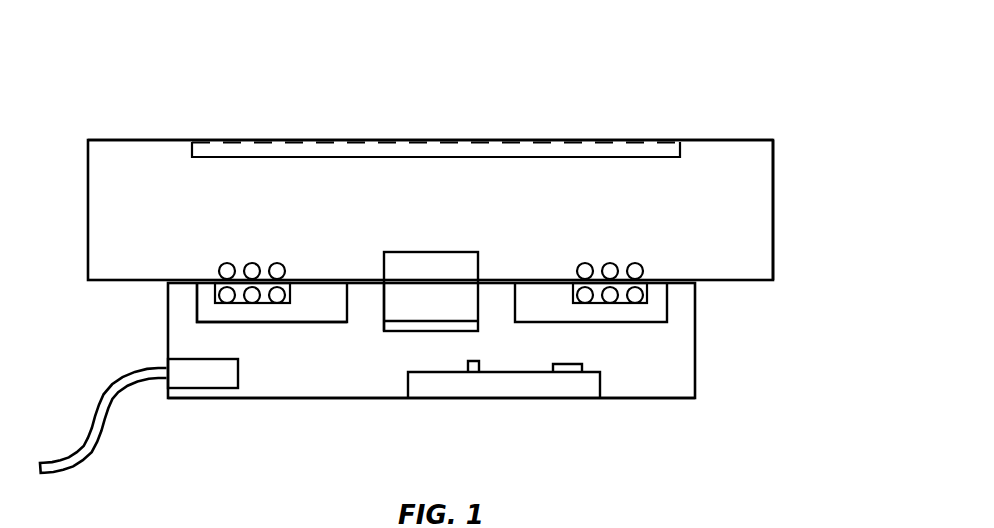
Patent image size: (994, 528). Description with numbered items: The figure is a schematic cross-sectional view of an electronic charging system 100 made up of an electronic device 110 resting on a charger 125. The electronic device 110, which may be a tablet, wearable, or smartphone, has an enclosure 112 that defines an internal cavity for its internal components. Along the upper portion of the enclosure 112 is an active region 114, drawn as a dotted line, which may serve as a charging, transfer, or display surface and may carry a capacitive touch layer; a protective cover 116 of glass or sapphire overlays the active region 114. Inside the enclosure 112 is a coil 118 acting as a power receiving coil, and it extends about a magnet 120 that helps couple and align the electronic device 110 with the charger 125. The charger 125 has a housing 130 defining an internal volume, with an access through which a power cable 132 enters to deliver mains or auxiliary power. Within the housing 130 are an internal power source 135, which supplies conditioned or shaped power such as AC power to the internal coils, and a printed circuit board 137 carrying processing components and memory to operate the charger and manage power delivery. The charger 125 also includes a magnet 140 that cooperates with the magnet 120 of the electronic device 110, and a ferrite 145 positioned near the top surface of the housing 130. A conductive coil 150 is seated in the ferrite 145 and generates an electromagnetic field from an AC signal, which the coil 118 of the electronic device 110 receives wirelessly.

The electronic charging system 100 is at (90, 61).
The electronic device 110 is at (774, 255).
The enclosure 112 is at (774, 178).
The active region 114 is at (518, 139).
The protective cover 116 is at (717, 139).
The coil 118 is at (258, 262).
The magnet 120 is at (438, 252).
The charger 125 is at (695, 362).
The housing 130 is at (633, 398).
The power cable 132 is at (92, 405).
The internal power source 135 is at (212, 389).
The printed circuit board 137 is at (408, 388).
The magnet 140 is at (383, 313).
The ferrite 145 is at (197, 295).
The conductive coil 150 is at (597, 303).